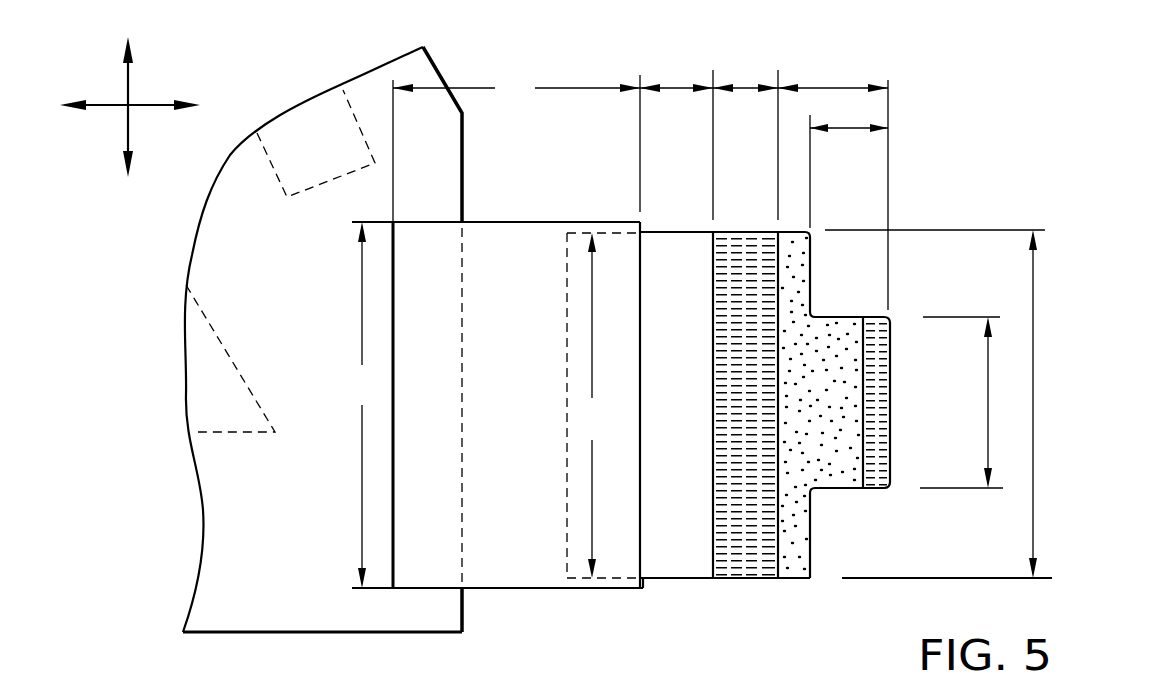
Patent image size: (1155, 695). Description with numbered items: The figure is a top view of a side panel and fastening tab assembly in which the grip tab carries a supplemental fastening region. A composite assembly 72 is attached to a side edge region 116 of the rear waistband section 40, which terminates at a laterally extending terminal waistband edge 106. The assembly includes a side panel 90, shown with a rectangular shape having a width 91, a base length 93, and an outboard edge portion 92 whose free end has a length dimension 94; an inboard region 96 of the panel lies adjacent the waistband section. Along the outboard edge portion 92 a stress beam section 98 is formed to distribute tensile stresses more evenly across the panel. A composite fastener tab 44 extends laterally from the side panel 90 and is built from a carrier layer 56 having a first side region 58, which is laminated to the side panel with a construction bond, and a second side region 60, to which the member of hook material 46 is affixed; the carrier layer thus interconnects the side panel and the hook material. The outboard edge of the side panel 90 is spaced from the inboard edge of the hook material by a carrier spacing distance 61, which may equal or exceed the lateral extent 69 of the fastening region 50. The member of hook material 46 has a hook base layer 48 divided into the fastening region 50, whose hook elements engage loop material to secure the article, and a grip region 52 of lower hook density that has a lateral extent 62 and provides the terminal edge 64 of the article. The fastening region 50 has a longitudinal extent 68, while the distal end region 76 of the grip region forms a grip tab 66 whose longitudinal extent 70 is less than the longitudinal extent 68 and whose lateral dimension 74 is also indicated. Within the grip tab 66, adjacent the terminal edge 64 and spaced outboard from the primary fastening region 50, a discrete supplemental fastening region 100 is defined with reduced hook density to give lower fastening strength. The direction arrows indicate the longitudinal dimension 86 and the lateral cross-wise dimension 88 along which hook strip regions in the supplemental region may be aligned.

The rear waistband section 40 is at (297, 613).
The composite fastener tab 44 is at (702, 580).
The member of hook material 46 is at (748, 580).
The hook base layer 48 is at (815, 580).
The fastening region 50 is at (738, 245).
The grip region 52 is at (800, 282).
The carrier layer 56 is at (671, 579).
The first side region 58 is at (585, 377).
The second side region 60 is at (797, 242).
The carrier spacing distance 61 is at (672, 82).
The lateral extent of grip region 62 is at (815, 82).
The terminal edge 64 is at (892, 378).
The grip tab 66 is at (838, 334).
The longitudinal extent of fastening region 68 is at (1034, 362).
The lateral extent of fastening region 69 is at (748, 82).
The longitudinal extent of grip tab 70 is at (987, 410).
The composite assembly 72 is at (648, 207).
The pad width 74 is at (828, 130).
The distal end region 76 is at (834, 492).
The longitudinal dimension 86 is at (131, 83).
The lateral cross-wise dimension 88 is at (112, 106).
The side panel 90 is at (507, 590).
The width 91 is at (516, 148).
The outboard edge portion 92 is at (641, 590).
The base length 93 is at (368, 405).
The length dimension 94 is at (598, 405).
The block 96 is at (427, 225).
The stress beam section 98 is at (623, 238).
The supplemental fastening region 100 is at (887, 476).
The terminal waistband edge 106 is at (232, 636).
The side edge regions 116 is at (462, 147).